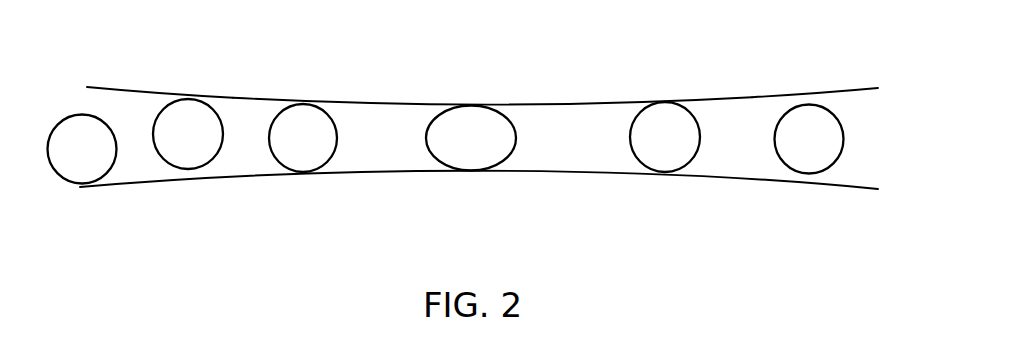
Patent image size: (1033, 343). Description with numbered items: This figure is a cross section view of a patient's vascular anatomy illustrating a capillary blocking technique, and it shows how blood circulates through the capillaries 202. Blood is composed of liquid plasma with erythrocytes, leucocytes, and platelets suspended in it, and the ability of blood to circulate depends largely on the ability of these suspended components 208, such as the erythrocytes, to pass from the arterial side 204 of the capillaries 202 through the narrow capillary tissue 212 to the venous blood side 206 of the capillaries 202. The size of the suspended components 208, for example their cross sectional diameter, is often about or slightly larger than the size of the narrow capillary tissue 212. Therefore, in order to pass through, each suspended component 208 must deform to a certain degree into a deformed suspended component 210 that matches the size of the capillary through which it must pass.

The capillaries 202 is at (107, 88).
The arterial side 204 is at (233, 98).
The venous blood side 206 is at (752, 97).
The suspended components 208 is at (82, 185).
The deformed suspended component 210 is at (517, 140).
The narrow capillary tissue 212 is at (473, 171).